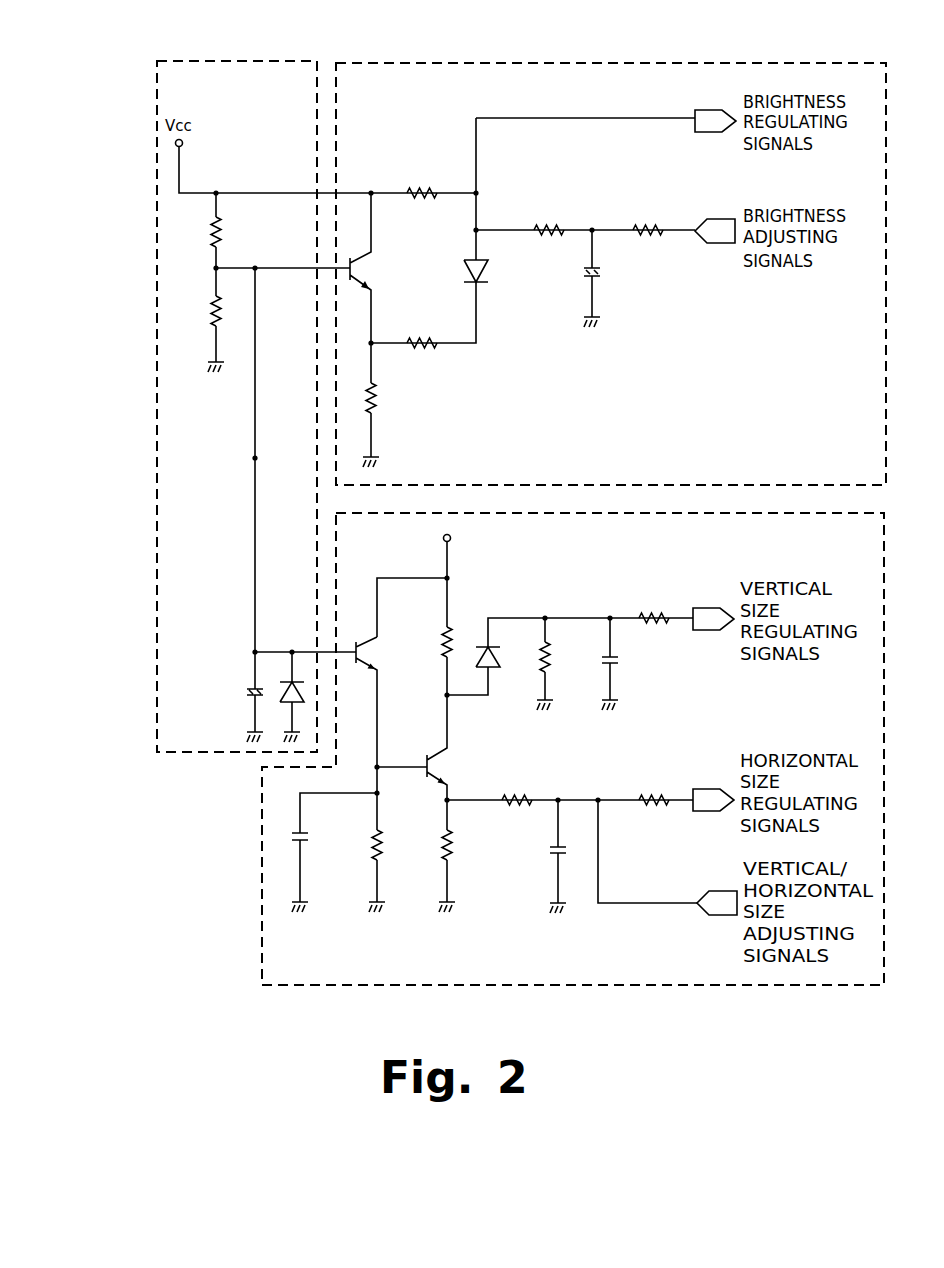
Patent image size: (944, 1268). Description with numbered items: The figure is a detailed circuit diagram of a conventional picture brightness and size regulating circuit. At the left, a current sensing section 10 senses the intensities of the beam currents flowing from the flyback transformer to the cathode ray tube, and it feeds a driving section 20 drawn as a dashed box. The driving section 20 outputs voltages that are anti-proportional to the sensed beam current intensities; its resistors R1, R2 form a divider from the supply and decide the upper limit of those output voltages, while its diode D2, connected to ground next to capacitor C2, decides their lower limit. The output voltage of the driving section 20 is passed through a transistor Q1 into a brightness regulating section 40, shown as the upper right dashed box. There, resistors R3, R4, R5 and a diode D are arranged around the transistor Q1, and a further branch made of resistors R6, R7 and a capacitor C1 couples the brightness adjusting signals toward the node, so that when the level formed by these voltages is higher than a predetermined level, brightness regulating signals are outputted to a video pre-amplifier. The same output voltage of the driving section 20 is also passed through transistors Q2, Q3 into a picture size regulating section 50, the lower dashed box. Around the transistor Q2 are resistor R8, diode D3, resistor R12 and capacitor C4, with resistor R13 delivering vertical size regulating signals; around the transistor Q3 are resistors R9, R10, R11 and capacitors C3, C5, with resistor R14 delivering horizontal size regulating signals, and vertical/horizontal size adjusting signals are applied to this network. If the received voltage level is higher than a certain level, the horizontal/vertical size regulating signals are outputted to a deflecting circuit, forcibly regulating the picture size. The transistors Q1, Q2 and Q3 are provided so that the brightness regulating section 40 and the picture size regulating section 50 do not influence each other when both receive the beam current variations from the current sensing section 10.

The current sensing section 10 is at (255, 458).
The driving section 20 is at (242, 62).
The brightness regulating section 40 is at (540, 63).
The picture size regulating section 50 is at (262, 852).
The resistor R1 is at (200, 232).
The resistor R2 is at (200, 311).
The resistor R3 is at (422, 181).
The resistor R4 is at (422, 329).
The resistor R5 is at (387, 398).
The resistor R6 is at (549, 218).
The resistor R7 is at (648, 218).
The resistor R8 is at (430, 642).
The resistor R9 is at (392, 845).
The resistor R10 is at (466, 845).
The resistor R11 is at (516, 787).
The resistor R12 is at (564, 657).
The resistor R13 is at (651, 606).
The resistor R14 is at (651, 787).
The capacitor C1 is at (604, 272).
The capacitor C2 is at (238, 696).
The capacitor C3 is at (312, 840).
The capacitor C4 is at (623, 663).
The capacitor C5 is at (545, 850).
The diode D is at (485, 271).
The diode D2 is at (323, 694).
The diode D3 is at (501, 660).
The transistor Q1 is at (377, 268).
The transistor Q2 is at (381, 715).
The transistor Q3 is at (451, 747).